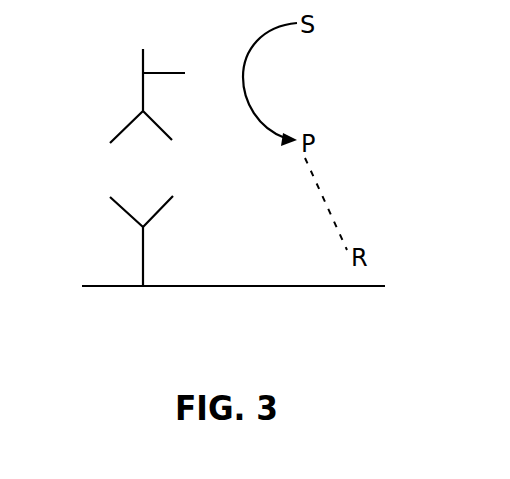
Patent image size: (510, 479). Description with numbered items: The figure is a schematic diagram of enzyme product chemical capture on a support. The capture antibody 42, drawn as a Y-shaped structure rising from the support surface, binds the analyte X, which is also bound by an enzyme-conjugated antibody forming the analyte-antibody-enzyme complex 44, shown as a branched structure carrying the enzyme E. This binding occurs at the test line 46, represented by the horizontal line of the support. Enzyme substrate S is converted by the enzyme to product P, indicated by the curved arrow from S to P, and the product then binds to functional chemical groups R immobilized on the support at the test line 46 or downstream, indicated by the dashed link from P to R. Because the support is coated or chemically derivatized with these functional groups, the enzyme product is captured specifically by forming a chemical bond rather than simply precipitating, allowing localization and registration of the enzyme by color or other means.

The capture antibody 42 is at (143, 242).
The analyte-antibody-enzyme complex 44 is at (143, 95).
The test line 46 is at (247, 292).